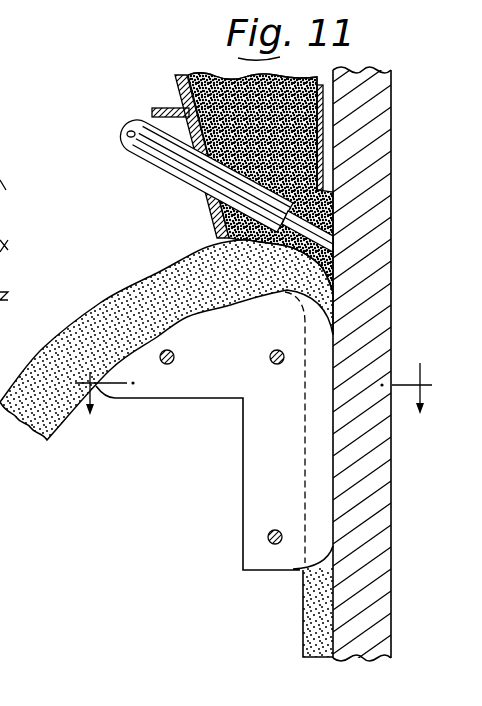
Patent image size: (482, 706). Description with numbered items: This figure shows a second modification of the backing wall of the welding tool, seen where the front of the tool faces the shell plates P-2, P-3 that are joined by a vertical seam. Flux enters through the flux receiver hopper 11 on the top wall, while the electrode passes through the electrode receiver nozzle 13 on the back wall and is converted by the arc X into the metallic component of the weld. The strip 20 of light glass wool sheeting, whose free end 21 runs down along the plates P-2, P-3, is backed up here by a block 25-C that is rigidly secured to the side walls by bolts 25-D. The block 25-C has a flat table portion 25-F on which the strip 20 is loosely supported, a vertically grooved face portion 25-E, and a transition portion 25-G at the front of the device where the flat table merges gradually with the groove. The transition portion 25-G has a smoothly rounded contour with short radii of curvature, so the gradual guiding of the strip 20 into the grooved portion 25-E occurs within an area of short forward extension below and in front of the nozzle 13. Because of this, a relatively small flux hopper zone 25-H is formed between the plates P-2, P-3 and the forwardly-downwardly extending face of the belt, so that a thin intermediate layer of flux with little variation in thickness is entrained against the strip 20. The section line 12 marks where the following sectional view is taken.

The shell plate P-2 is at (9, 132).
The shell plate P-3 is at (395, 125).
The arc X is at (320, 231).
The flux receiver hopper 11 is at (178, 87).
The electrode receiver nozzle 13 is at (153, 166).
The strip 20 is at (43, 348).
The free end 21 is at (303, 613).
The block 25-C is at (247, 475).
The bolts 25-D is at (271, 363).
The grooved face portion 25-E is at (312, 483).
The table portion 25-F is at (188, 313).
The transition portion 25-G is at (318, 308).
The flux hopper zone 25-H is at (330, 266).
The section line 12 is at (253, 402).